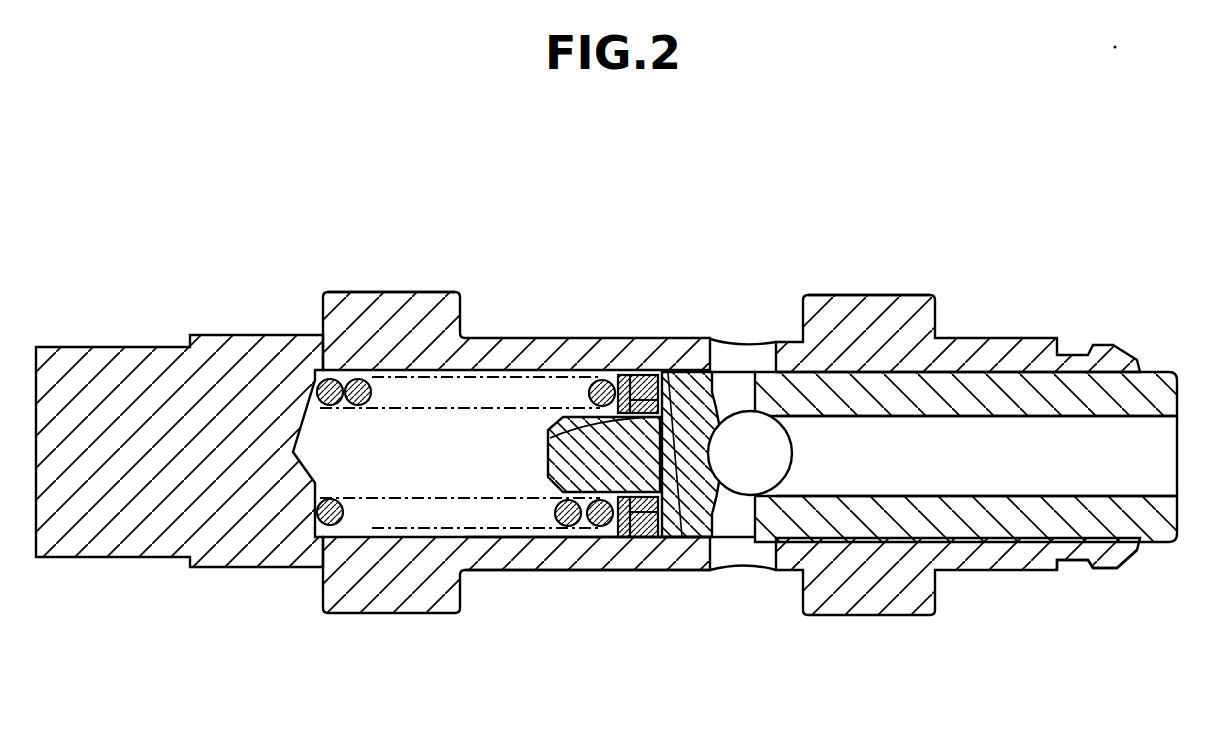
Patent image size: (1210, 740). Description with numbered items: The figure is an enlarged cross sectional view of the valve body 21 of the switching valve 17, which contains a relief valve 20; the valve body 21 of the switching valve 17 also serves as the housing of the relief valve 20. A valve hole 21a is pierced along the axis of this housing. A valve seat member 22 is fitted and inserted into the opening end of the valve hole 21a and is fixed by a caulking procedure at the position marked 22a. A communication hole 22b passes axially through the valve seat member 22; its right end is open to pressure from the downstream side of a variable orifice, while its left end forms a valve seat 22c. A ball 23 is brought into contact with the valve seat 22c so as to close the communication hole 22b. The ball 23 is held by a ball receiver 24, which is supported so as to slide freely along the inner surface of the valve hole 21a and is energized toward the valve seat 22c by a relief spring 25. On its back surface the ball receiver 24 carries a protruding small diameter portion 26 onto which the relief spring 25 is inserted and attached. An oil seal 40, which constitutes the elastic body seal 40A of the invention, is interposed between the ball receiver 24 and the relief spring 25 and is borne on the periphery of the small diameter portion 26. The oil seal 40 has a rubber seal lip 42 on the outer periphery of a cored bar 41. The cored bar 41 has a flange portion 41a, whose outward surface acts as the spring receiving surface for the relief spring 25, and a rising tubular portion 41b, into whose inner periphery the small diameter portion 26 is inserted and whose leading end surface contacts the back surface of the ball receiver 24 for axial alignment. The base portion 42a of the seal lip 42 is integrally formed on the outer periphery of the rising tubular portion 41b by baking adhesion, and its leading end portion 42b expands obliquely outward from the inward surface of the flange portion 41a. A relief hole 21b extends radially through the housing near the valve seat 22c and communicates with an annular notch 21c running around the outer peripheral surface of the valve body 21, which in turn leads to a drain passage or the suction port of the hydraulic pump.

The switching valve 17 is at (898, 290).
The relief valve 20 is at (415, 250).
The valve body 21 is at (830, 308).
The valve hole 21a is at (477, 535).
The relief hole 21b is at (762, 570).
The annular notch 21c is at (540, 572).
The valve seat member 22 is at (1010, 397).
The caulking position 22a is at (1073, 572).
The communication hole 22b is at (1142, 425).
The valve seat 22c is at (795, 437).
The ball 23 is at (736, 371).
The ball receiver 24 is at (690, 535).
The relief spring 25 is at (297, 568).
The small diameter portion 26 is at (558, 503).
The oil seal 40 is at (640, 354).
The elastic body seal 40A is at (632, 550).
The cored bar 41 is at (548, 433).
The flange portion 41a is at (598, 380).
The rising tubular portion 41b is at (665, 538).
The seal lip 42 is at (550, 463).
The base portion 42a is at (708, 440).
The leading end portion 42b is at (648, 385).